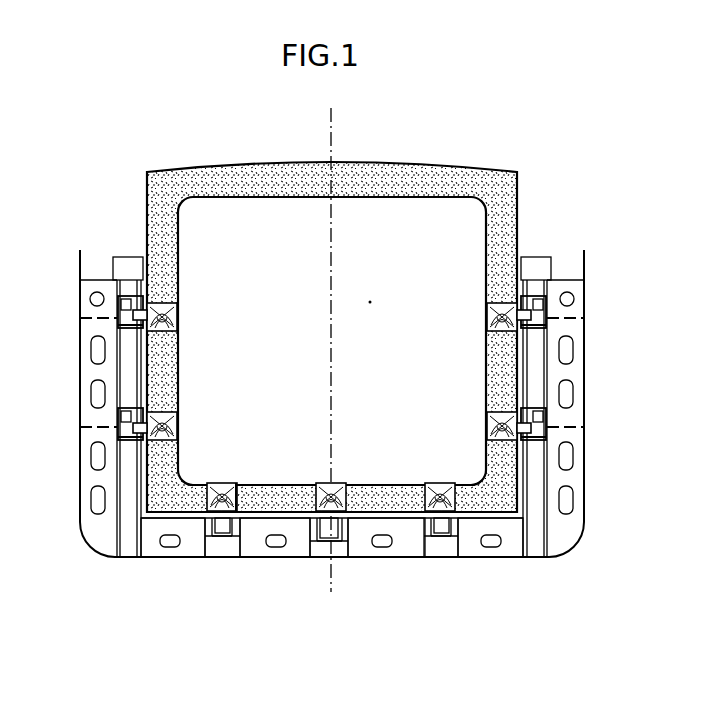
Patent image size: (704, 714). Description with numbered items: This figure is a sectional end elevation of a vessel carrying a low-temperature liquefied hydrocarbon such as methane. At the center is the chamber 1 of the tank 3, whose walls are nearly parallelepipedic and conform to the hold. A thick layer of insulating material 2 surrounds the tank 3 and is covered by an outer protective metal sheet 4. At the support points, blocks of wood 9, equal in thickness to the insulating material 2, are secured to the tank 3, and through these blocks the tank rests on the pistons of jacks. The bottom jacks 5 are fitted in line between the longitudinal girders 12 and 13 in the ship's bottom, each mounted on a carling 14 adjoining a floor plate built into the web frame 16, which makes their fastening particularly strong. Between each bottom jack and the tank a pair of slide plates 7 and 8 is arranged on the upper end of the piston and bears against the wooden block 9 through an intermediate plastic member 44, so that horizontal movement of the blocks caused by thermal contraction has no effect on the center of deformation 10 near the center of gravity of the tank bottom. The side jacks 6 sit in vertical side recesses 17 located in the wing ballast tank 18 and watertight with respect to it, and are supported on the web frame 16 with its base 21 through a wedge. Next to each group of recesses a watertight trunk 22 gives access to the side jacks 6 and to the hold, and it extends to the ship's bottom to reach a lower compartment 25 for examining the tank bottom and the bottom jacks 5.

The chamber 1 is at (370, 302).
The insulating material 2 is at (250, 178).
The tank 3 is at (178, 197).
The outer protective metal sheet 4 is at (138, 357).
The bottom jack 5 is at (228, 522).
The side jack 6 is at (132, 315).
The slide plate 7 is at (430, 518).
The slide plate 8 is at (434, 522).
The block of wood 9 is at (147, 305).
The center of deformation 10 is at (331, 484).
The longitudinal girder 12 is at (200, 547).
The longitudinal girder 13 is at (238, 547).
The carling 14 is at (325, 540).
The web frame 16 is at (107, 530).
The side recess 17 is at (128, 300).
The wing ballast tank 18 is at (102, 370).
The base 21 is at (88, 429).
The trunk 22 is at (127, 348).
The lower compartment 25 is at (277, 540).
The intermediate plastic member 44 is at (236, 485).